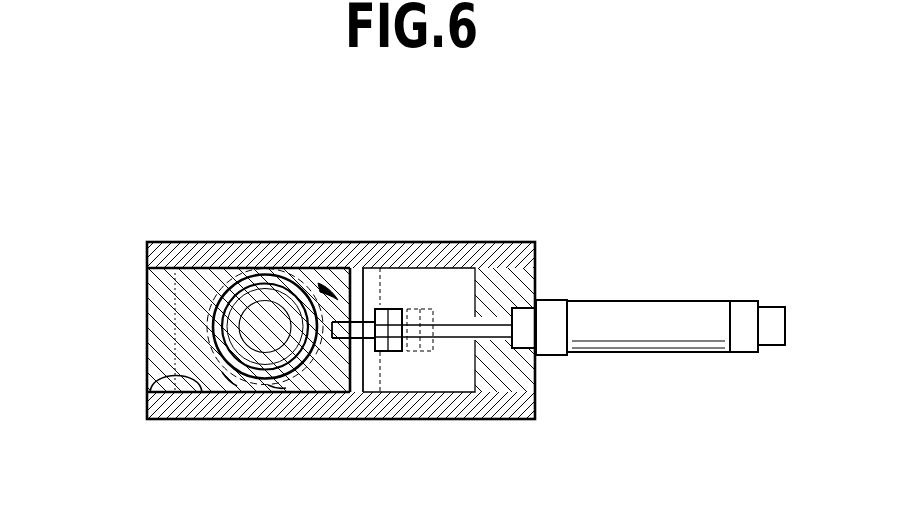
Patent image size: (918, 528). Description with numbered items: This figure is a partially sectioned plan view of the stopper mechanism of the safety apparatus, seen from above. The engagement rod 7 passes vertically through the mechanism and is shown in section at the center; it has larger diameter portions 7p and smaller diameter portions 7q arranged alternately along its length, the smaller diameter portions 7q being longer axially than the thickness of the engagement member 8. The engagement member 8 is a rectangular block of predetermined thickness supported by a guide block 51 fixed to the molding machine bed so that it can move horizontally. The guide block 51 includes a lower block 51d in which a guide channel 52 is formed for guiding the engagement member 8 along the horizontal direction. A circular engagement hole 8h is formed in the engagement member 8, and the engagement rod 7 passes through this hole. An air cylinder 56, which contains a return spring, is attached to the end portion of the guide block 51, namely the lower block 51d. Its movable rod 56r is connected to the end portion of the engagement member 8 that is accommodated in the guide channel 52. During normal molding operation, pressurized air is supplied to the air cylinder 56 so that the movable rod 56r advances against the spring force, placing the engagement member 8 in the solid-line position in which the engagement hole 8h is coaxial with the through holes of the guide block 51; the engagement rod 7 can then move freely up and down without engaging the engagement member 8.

The engagement rod 7 is at (220, 310).
The larger diameter portions 7p is at (228, 378).
The smaller diameter portions 7q is at (280, 387).
The engagement member 8 is at (362, 373).
The engagement hole 8h is at (327, 295).
The guide block 51 is at (450, 420).
The lower block 51d is at (342, 268).
The guide channel 52 is at (150, 382).
The air cylinder 56 is at (683, 301).
The movable rod 56r is at (455, 322).